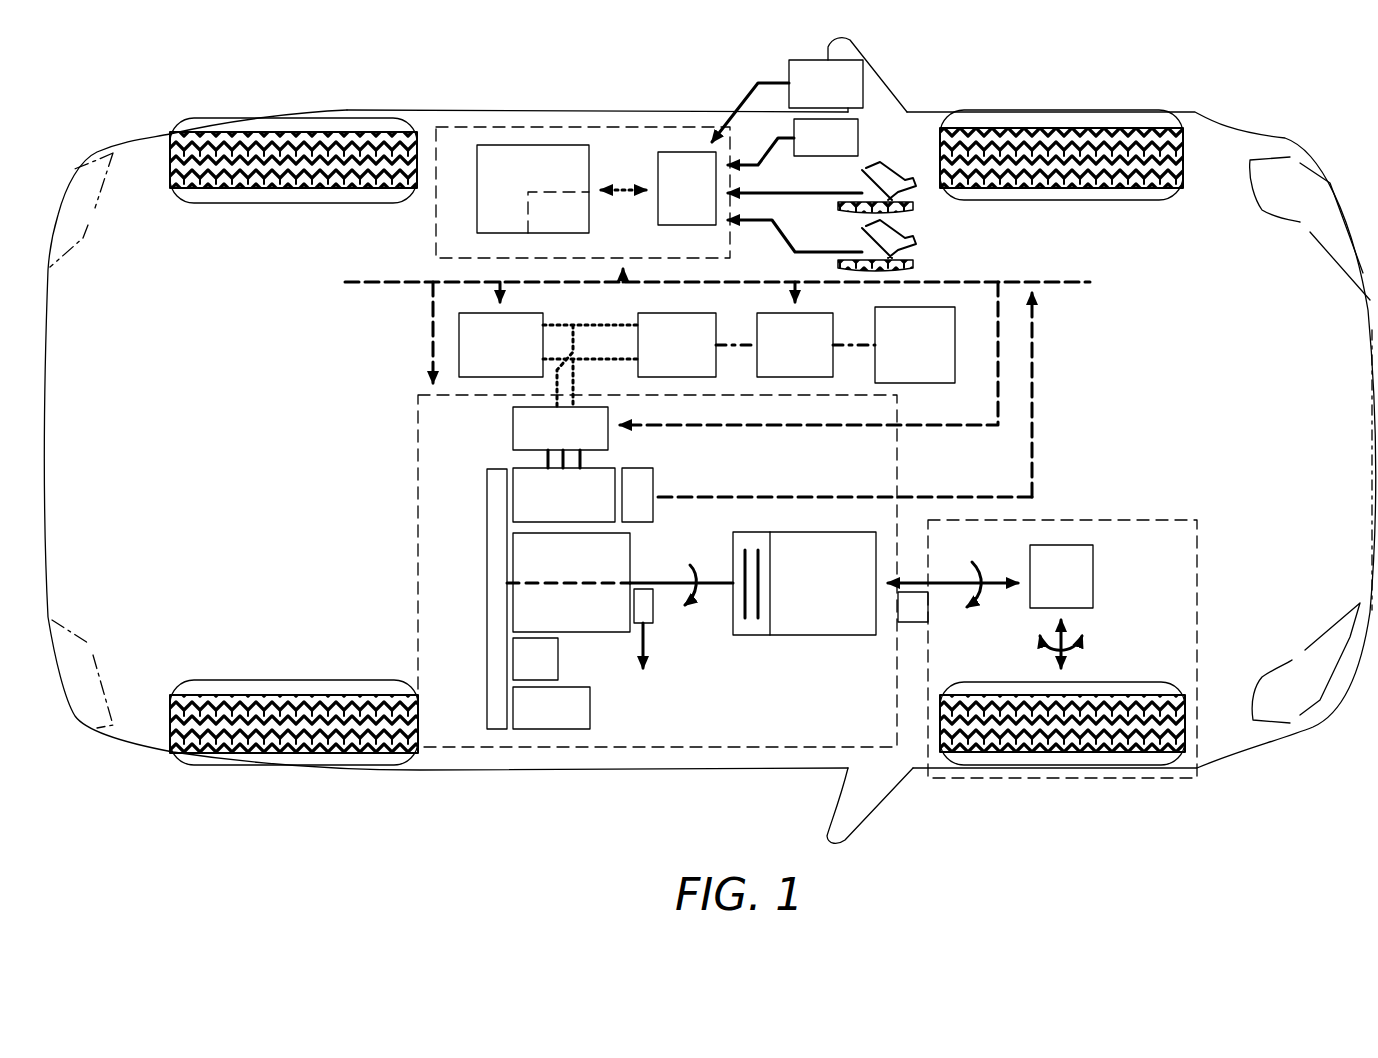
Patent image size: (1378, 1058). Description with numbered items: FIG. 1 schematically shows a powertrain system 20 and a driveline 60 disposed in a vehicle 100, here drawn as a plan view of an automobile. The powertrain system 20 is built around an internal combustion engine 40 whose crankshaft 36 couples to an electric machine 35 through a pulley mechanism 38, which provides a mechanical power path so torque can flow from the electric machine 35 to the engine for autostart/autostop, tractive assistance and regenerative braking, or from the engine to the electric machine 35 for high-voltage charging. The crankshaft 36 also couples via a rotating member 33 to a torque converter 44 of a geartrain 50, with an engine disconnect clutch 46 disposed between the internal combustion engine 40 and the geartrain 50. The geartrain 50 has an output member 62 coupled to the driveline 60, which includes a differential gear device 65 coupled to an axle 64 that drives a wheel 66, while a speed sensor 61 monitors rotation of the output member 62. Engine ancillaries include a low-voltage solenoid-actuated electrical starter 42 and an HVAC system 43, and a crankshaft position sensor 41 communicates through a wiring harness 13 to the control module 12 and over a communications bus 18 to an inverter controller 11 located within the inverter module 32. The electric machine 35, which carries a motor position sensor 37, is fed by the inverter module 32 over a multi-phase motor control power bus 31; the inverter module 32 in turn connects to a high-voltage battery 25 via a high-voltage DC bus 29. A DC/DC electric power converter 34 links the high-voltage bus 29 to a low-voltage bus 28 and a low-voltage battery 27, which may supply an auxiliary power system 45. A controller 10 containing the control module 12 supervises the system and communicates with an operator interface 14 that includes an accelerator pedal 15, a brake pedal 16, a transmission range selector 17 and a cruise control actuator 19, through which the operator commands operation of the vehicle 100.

The vehicle 100 is at (1165, 252).
The controller 10 is at (438, 163).
The inverter controller 11 is at (572, 229).
The control module 12 is at (517, 190).
The wiring harness 13 is at (645, 665).
The operator interface 14 is at (672, 206).
The accelerator pedal 15 is at (862, 252).
The brake pedal 16 is at (862, 192).
The transmission range selector 17 is at (811, 153).
The communications bus 18 is at (403, 272).
The cruise control actuator 19 is at (811, 99).
The powertrain system 20 is at (910, 445).
The high-voltage battery 25 is at (486, 360).
The low-voltage battery 27 is at (780, 360).
The low-voltage bus 28 is at (738, 343).
The high-voltage DC bus 29 is at (607, 357).
The multi-phase motor control power bus 31 is at (547, 460).
The inverter module 32 is at (545, 443).
The rotating member 33 is at (718, 588).
The DC/DC electric power converter 34 is at (662, 360).
The electric machine 35 is at (549, 509).
The crankshaft 36 is at (588, 582).
The motor position sensor 37 is at (638, 468).
The pulley mechanism 38 is at (487, 556).
The internal combustion engine 40 is at (557, 622).
The crankshaft position sensor 41 is at (653, 600).
The low-voltage solenoid-actuated electrical starter 42 is at (513, 670).
The HVAC system 43 is at (536, 722).
The torque converter 44 is at (752, 628).
The auxiliary power system 45 is at (900, 360).
The engine disconnect clutch 46 is at (760, 602).
The geartrain 50 is at (802, 598).
The driveline 60 is at (1100, 510).
The speed sensor 61 is at (913, 624).
The output member 62 is at (915, 580).
The axle 64 is at (1080, 634).
The differential gear device 65 is at (1046, 591).
The wheel 66 is at (1015, 672).